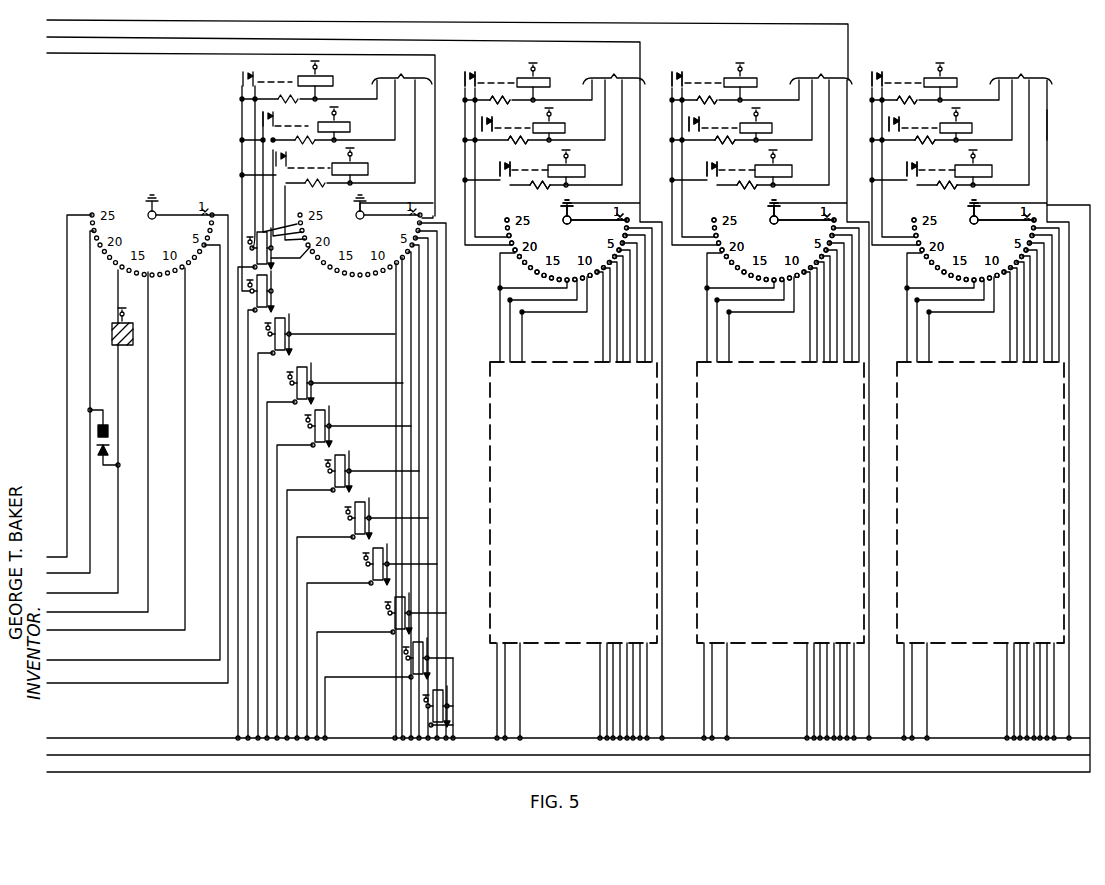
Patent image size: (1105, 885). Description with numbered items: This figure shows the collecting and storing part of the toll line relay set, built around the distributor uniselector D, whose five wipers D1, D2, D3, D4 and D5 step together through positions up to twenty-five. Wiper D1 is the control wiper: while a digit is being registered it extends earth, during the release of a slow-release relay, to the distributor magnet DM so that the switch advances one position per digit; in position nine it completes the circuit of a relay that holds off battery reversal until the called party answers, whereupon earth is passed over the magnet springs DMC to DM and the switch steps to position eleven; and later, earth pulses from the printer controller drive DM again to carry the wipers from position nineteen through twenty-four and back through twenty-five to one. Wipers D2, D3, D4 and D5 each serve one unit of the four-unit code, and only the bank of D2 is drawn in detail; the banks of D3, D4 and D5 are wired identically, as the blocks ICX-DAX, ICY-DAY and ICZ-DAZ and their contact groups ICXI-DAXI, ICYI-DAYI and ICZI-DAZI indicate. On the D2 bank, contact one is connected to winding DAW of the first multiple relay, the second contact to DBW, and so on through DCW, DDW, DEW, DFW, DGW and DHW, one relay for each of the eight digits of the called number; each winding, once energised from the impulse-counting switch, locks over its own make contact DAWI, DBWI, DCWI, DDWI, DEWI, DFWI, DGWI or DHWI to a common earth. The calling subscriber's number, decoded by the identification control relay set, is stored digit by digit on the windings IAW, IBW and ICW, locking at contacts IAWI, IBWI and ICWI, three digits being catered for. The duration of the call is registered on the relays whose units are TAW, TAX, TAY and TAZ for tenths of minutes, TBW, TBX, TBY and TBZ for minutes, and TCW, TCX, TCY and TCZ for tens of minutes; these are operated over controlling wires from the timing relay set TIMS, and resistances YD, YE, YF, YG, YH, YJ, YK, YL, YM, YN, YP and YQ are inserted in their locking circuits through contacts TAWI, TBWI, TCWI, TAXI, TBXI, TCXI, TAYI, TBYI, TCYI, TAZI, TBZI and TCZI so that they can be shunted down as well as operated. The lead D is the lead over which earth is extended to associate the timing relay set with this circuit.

The first wiper of distributor uniselector D1 is at (160, 239).
The second wiper of distributor uniselector D2 is at (370, 243).
The third wiper of distributor uniselector D3 is at (578, 245).
The fourth wiper of distributor uniselector D4 is at (785, 245).
The fifth wiper of distributor uniselector D5 is at (985, 245).
The lead to timing relay set D is at (1070, 134).
The distributor magnet DM is at (134, 304).
The magnet springs DMC is at (110, 440).
The relay ICW is at (250, 224).
The contact ICW1 ICWI is at (252, 276).
The W winding of second calling-number multiple relay IBW is at (256, 308).
The contact IBW1 IBWI is at (289, 324).
The W winding of first calling-number multiple relay IAW is at (290, 343).
The contact IAW1 IAWI is at (302, 362).
The relay DHW is at (314, 386).
The contact DHW1 DHWI is at (322, 408).
The relay DGW is at (308, 424).
The contact DGW1 DGWI is at (329, 446).
The relay DFW is at (334, 480).
The contact DFW1 DFWI is at (348, 488).
The relay DEW is at (361, 510).
The contact DEW1 DEWI is at (353, 538).
The relay DDW is at (388, 556).
The contact DDW1 DDWI is at (374, 580).
The relay DCW is at (388, 602).
The contact DCW1 DCWI is at (390, 632).
The W winding of second called-number multiple relay DBW is at (406, 647).
The contact DBW1 DBWI is at (410, 676).
The W winding of first called-number multiple relay DAW is at (426, 695).
The contact DAW1 DAWI is at (430, 726).
The W winding of tenths-of-minutes storage relay TAW is at (335, 75).
The contact TAW1 TAWI is at (240, 78).
The W winding of minutes storage relay TBW is at (350, 124).
The contact TBW1 TBWI is at (285, 112).
The W winding of tens-of-minutes storage relay TCW is at (370, 168).
The contact TCW1 TCWI is at (303, 157).
The resistor YD is at (285, 84).
The resistor YE is at (318, 140).
The resistor YF is at (326, 188).
The timing relay set TIMS is at (716, 65).
The X winding of tenths-of-minutes storage relay TAX is at (539, 64).
The contact TAX1 TAXI is at (462, 82).
The X winding of minutes storage relay TBX is at (565, 127).
The contact TBX1 TBXI is at (508, 120).
The X winding of tens-of-minutes storage relay TCX is at (581, 167).
The contact TCX1 TCXI is at (506, 188).
The resistor YG is at (498, 98).
The resistor YH is at (528, 142).
The resistor YJ is at (550, 190).
The relay group ICX-DAX is at (573, 502).
The contact group ICX1-DAX1 ICXI-DAXI is at (550, 632).
The Y winding of tenths-of-minutes storage relay TAY is at (744, 64).
The contact TAY1 TAYI is at (669, 82).
The Y winding of minutes storage relay TBY is at (772, 127).
The contact TBY1 TBYI is at (714, 120).
The Y winding of tens-of-minutes storage relay TCY is at (788, 167).
The contact TCY1 TCYI is at (713, 188).
The resistor YK is at (705, 98).
The resistor YL is at (735, 142).
The resistor YM is at (757, 190).
The relay group ICY-DAY is at (780, 502).
The contact group ICY1-DAY1 ICYI-DAYI is at (755, 632).
The Z winding of tenths-of-minutes storage relay TAZ is at (945, 64).
The contact TAZ1 TAZI is at (869, 82).
The Z winding of minutes storage relay TBZ is at (972, 127).
The contact TBZ1 TBZI is at (915, 120).
The Z winding of tens-of-minutes storage relay TCZ is at (988, 167).
The contact TCZ1 TCZI is at (913, 188).
The resistor YN is at (905, 98).
The resistor YP is at (935, 142).
The resistor YQ is at (957, 190).
The relay group ICZ-DAZ is at (980, 502).
The contact group ICZ1-DAZ1 ICZI-DAZI is at (957, 632).